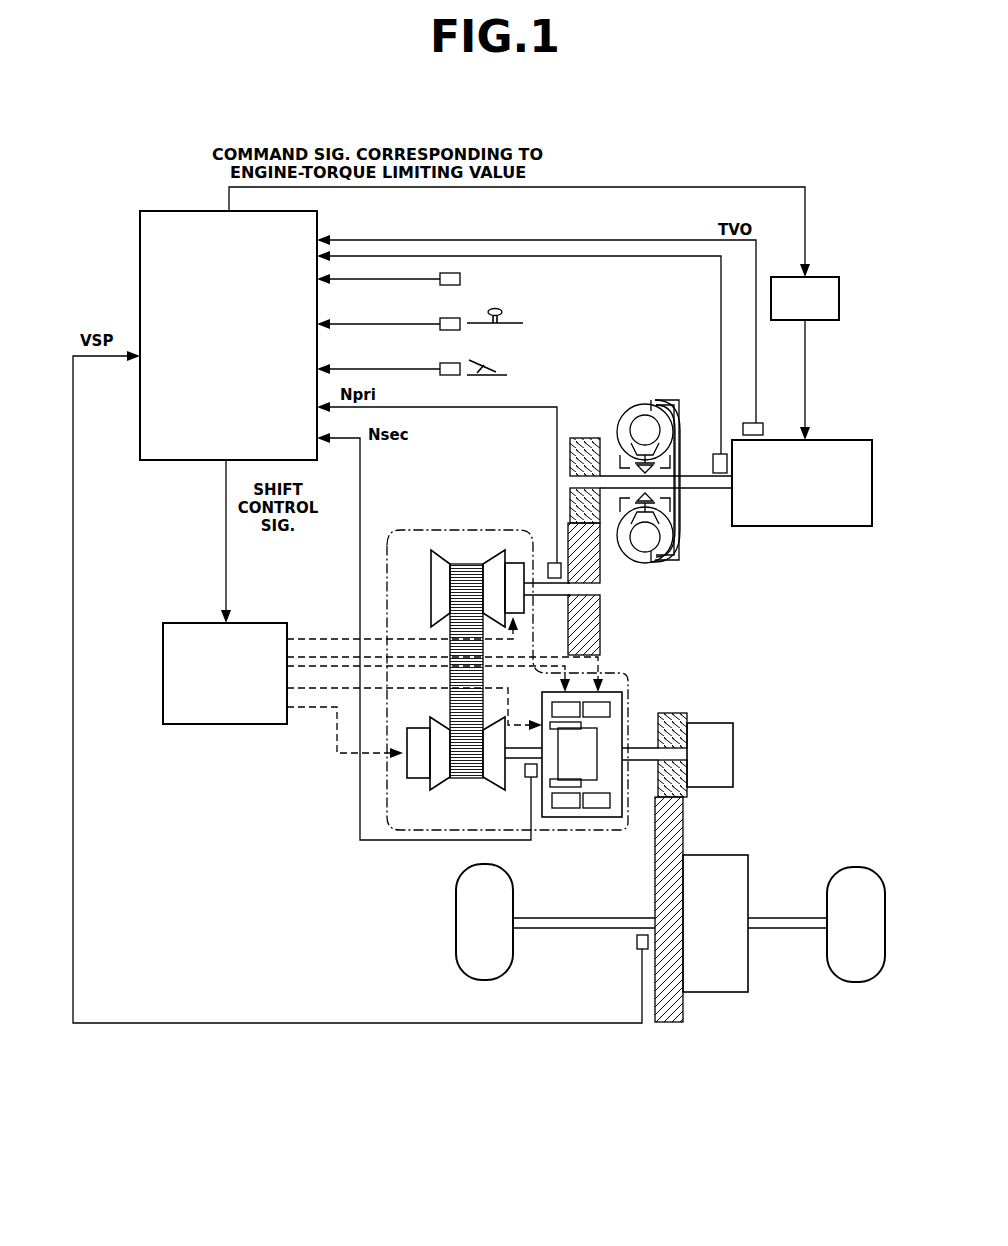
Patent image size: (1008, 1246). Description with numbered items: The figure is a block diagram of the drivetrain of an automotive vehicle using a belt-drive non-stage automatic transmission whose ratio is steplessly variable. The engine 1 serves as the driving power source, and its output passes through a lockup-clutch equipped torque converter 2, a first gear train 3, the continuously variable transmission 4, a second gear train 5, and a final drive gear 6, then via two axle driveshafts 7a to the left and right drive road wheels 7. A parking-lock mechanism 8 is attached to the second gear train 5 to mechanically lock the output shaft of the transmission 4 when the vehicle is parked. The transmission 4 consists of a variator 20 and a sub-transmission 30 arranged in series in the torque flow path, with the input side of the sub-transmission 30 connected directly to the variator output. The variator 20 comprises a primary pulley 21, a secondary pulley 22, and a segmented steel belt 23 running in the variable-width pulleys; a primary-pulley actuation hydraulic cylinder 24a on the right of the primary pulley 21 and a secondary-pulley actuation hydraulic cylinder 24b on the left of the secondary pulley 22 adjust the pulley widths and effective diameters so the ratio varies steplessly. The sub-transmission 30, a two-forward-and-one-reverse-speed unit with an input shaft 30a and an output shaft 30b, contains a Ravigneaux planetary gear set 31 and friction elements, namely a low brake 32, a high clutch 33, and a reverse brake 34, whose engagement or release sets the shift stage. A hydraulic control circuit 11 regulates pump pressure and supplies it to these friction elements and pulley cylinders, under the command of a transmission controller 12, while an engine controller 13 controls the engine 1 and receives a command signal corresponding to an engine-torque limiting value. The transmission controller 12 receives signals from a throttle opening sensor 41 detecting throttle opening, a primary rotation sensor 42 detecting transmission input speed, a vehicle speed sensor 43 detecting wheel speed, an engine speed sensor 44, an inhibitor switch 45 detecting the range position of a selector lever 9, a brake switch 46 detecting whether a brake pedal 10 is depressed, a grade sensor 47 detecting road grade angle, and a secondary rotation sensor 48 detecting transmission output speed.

The engine 1 is at (843, 441).
The torque converter 2 is at (660, 392).
The first gear train 3 is at (588, 428).
The transmission 4 is at (436, 528).
The second gear train 5 is at (658, 1040).
The final drive gear 6 is at (728, 870).
The drive road wheels 7 is at (462, 947).
The axle driveshafts 7a is at (547, 928).
The parking-lock mechanism 8 is at (712, 733).
The selector lever 9 is at (512, 302).
The brake pedal 10 is at (508, 360).
The hydraulic control circuit 11 is at (245, 622).
The transmission controller 12 is at (186, 212).
The engine controller 13 is at (822, 277).
The variator 20 is at (410, 560).
The primary pulley 21 is at (442, 572).
The secondary pulley 22 is at (490, 778).
The segmented steel belt 23 is at (470, 562).
The primary-pulley actuation hydraulic cylinder 24a is at (512, 562).
The secondary-pulley actuation hydraulic cylinder 24b is at (418, 779).
The sub-transmission 30 is at (595, 769).
The input shaft of sub-transmission 30a is at (515, 760).
The output shaft of sub-transmission 30b is at (646, 762).
The Ravigneaux planetary gear set 31 is at (596, 740).
The low brake 32 is at (560, 710).
The high clutch 33 is at (553, 790).
The reverse brake 34 is at (603, 702).
The throttle opening sensor 41 is at (760, 424).
The primary rotation sensor 42 is at (549, 570).
The vehicle speed sensor 43 is at (637, 944).
The engine speed sensor 44 is at (713, 463).
The inhibitor switch 45 is at (449, 331).
The brake switch 46 is at (449, 376).
The grade sensor 47 is at (449, 286).
The secondary rotation sensor 48 is at (532, 778).